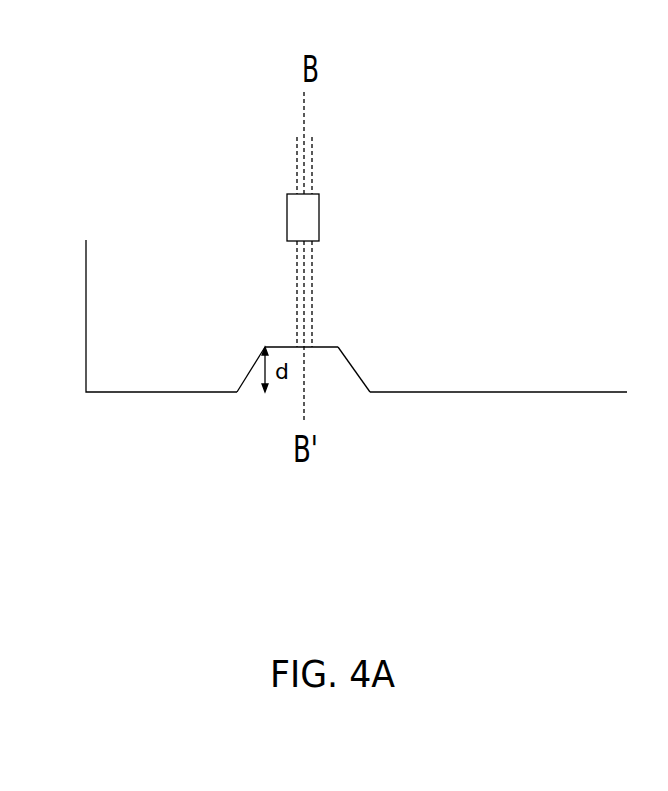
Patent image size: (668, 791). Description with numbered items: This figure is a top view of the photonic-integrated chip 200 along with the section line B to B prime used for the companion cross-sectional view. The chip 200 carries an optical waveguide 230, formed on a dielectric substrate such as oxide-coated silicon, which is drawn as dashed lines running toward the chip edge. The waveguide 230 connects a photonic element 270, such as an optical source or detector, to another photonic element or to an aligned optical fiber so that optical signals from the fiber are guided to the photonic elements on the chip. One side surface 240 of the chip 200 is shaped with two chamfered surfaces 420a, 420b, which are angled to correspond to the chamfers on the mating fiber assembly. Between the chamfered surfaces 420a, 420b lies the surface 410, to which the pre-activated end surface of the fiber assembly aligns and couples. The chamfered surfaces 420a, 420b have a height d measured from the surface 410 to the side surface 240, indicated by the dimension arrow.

The photonic-integrated chip 200 is at (161, 299).
The optical waveguide 230 is at (320, 158).
The side surface of the chip 240 is at (452, 400).
The photonic element 270 is at (282, 204).
The surface connecting the chamfered surfaces 410 is at (335, 338).
The chamfered surface 420a is at (240, 352).
The chamfered surface 420b is at (369, 358).